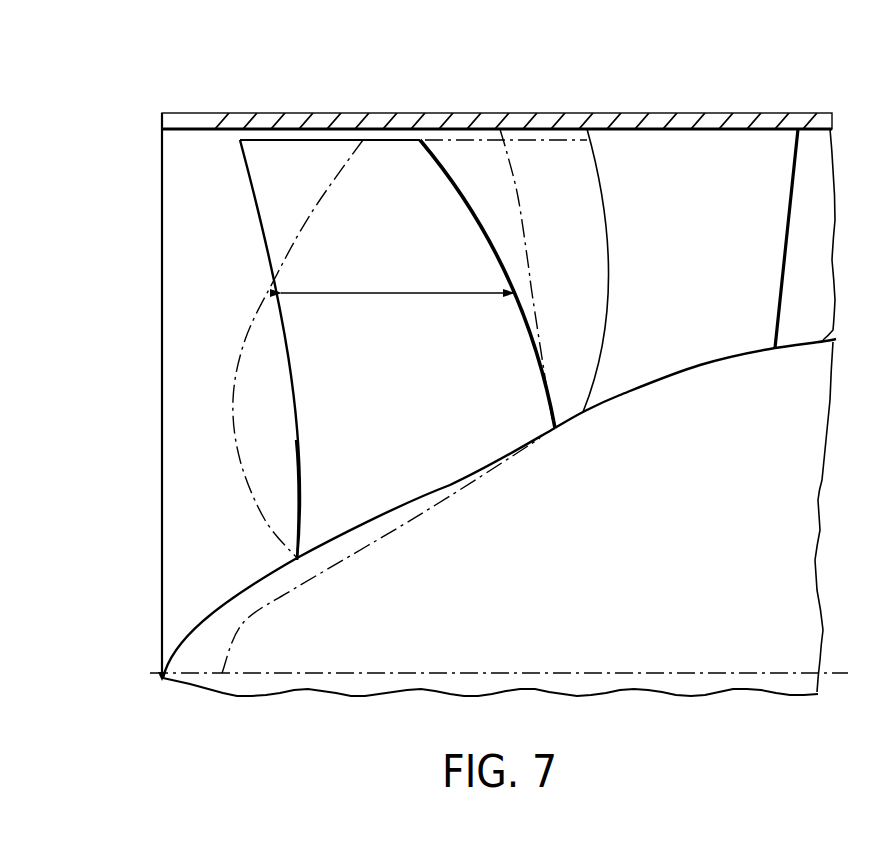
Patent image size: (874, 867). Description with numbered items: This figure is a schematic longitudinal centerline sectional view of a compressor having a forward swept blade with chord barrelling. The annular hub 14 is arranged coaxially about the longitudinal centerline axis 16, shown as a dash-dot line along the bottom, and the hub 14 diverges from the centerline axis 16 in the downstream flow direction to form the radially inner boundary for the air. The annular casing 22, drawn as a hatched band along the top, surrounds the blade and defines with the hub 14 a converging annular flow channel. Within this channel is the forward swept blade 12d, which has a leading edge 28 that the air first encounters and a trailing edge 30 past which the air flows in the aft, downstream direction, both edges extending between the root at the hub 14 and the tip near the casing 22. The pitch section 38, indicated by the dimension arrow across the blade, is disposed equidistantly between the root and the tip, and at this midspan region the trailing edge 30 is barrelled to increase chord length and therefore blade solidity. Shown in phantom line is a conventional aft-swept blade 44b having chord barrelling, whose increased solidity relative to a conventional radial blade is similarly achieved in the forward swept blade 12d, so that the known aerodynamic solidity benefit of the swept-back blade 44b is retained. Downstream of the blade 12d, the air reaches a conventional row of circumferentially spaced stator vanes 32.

The annular casing 22 is at (608, 112).
The annular hub 14 is at (216, 608).
The longitudinal centerline axis 16 is at (530, 673).
The forward swept blade with chord barrelling 12d is at (292, 414).
The trailing edge 30 is at (545, 363).
The leading edge 28 is at (297, 478).
The aft-swept blade with chord barrelling 44b is at (525, 233).
The pitch section 38 is at (352, 293).
The stator vanes 32 is at (710, 245).